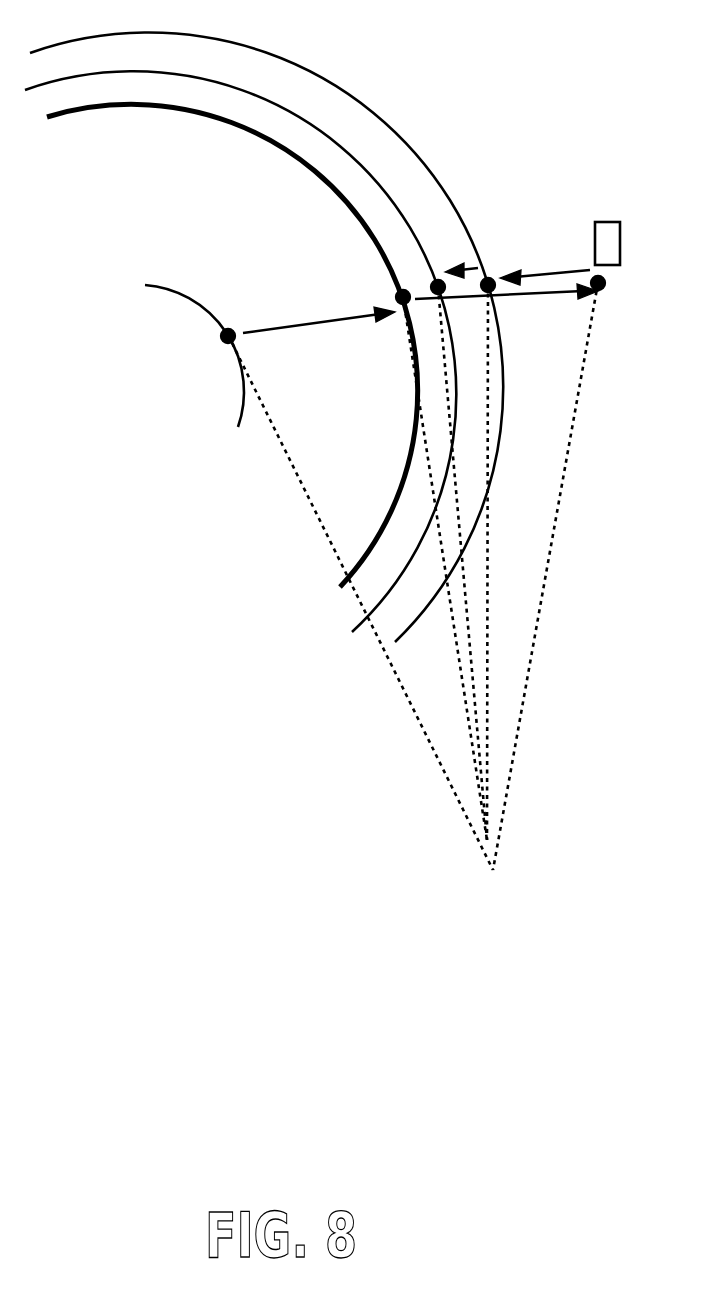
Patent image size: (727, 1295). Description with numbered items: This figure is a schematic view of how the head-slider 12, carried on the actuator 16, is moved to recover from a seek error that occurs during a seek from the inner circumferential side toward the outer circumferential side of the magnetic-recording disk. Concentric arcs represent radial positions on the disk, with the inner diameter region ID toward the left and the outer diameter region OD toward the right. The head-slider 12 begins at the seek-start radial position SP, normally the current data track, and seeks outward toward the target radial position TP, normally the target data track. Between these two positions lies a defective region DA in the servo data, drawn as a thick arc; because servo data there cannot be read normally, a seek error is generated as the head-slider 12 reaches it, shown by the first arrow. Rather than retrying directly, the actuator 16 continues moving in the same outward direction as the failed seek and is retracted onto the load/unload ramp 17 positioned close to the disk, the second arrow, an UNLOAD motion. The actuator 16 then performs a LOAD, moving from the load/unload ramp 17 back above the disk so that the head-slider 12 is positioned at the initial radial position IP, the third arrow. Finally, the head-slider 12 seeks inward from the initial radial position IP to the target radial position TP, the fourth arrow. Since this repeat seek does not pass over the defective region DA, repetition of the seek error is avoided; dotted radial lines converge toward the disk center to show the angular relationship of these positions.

The head-slider 12 is at (223, 339).
The actuator 16 is at (404, 690).
The load/unload ramp 17 is at (612, 222).
The target radial position TP is at (240, 84).
The initial radial position IP is at (362, 100).
The defective region DA is at (206, 124).
The seek-start radial position SP is at (202, 302).
The inner diameter region ID is at (212, 525).
The outer diameter region OD is at (590, 523).
The load direction label LOAD is at (522, 226).
The unload direction label UNLOAD is at (547, 340).